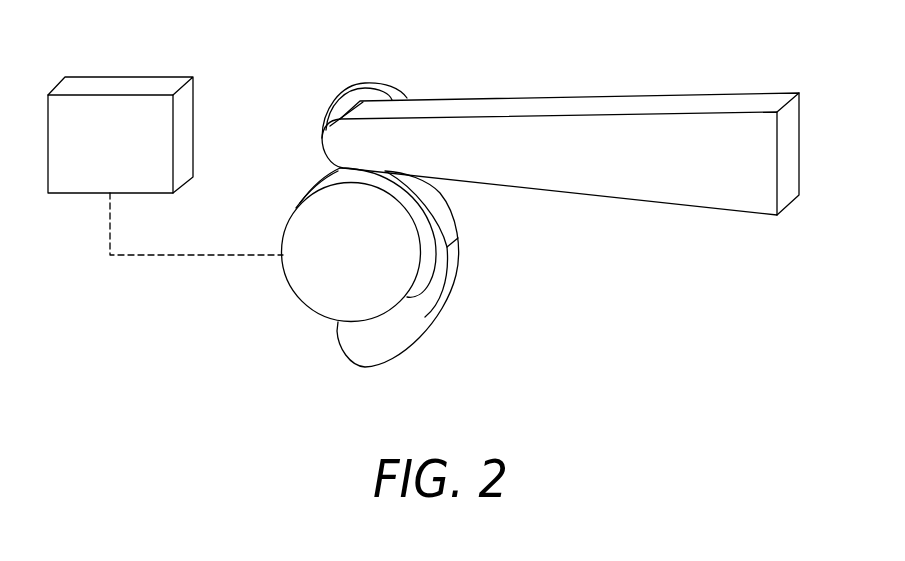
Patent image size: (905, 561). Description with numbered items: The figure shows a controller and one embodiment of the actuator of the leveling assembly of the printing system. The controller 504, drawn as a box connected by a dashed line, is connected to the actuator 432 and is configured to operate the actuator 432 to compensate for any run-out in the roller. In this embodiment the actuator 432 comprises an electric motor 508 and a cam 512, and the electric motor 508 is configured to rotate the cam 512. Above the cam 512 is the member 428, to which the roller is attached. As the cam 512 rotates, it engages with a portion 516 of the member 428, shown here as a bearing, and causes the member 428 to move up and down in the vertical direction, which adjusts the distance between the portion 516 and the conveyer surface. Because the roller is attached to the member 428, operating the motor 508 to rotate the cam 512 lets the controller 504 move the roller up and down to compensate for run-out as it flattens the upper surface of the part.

The controller 504 is at (120, 85).
The member 428 is at (615, 108).
The portion of the member 516 is at (322, 138).
The electric motor 508 is at (312, 225).
The cam 512 is at (400, 337).
The actuator 432 is at (288, 312).